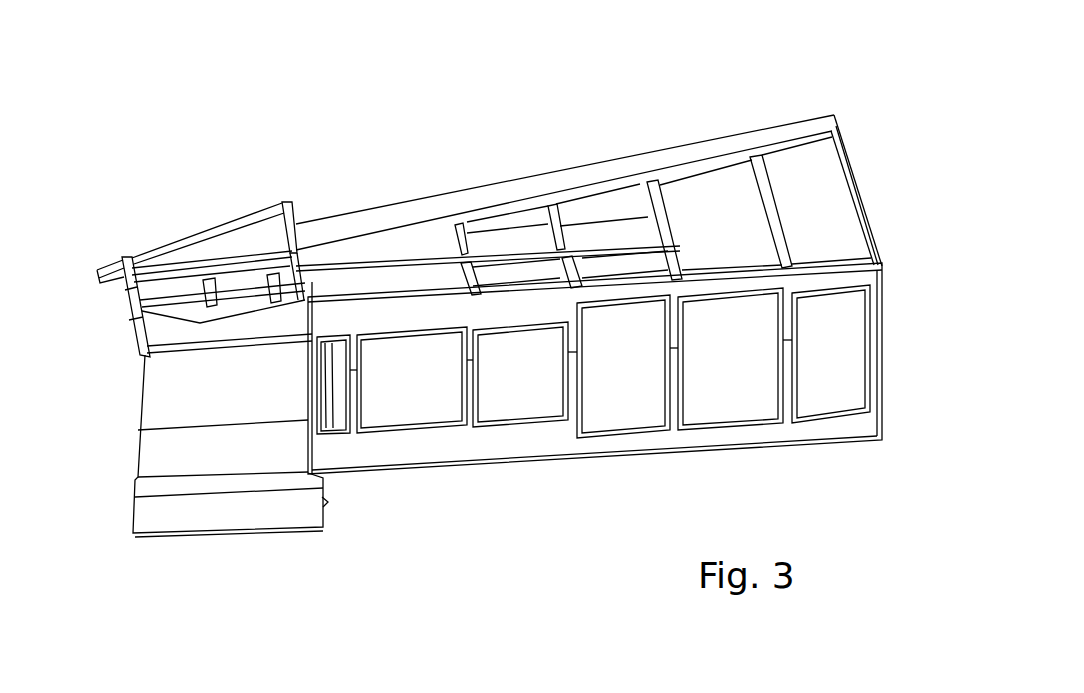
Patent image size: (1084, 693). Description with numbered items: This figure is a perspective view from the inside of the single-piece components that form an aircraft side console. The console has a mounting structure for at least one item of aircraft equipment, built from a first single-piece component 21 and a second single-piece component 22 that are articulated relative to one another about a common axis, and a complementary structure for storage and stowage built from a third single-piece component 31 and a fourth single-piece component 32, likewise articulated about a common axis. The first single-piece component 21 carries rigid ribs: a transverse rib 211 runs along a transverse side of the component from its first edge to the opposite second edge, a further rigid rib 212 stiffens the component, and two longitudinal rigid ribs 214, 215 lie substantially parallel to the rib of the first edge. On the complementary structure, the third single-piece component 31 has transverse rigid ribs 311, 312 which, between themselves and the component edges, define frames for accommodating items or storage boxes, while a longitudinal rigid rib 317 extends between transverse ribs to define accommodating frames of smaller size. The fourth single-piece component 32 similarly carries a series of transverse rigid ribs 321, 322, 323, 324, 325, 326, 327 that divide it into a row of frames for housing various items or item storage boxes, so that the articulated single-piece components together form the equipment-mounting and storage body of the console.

The first single-piece component 21 is at (240, 243).
The transverse rib 211 is at (293, 213).
The rigid rib 212 is at (112, 295).
The longitudinal rigid rib 214 is at (128, 327).
The longitudinal rigid rib 215 is at (170, 267).
The second single-piece component 22 is at (145, 457).
The third single-piece component 31 is at (440, 207).
The transverse rigid rib 311 is at (863, 198).
The transverse rigid rib 312 is at (763, 225).
The longitudinal rigid rib 317 is at (608, 232).
The fourth single-piece component 32 is at (524, 443).
The transverse rigid rib 321 is at (883, 331).
The transverse rigid rib 322 is at (790, 360).
The transverse rigid rib 323 is at (683, 367).
The transverse rigid rib 324 is at (580, 375).
The transverse rigid rib 325 is at (477, 378).
The transverse rigid rib 326 is at (357, 390).
The transverse rigid rib 327 is at (320, 397).